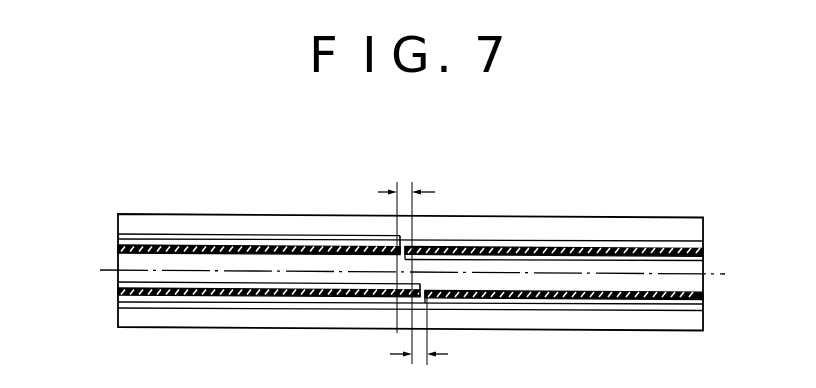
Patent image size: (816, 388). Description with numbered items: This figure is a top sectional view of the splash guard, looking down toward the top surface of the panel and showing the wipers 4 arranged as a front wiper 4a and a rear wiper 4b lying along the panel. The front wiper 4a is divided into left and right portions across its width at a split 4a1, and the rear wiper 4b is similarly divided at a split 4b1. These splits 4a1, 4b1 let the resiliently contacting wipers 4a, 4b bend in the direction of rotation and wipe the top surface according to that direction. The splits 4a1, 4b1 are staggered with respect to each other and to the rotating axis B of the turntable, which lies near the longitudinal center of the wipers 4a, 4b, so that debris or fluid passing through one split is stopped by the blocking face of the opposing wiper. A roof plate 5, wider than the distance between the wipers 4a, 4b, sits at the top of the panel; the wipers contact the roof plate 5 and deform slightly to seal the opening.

The wiper 4 is at (95, 268).
The front wiper 4a is at (293, 249).
The split 4a1 is at (399, 239).
The rear wiper 4b is at (262, 297).
The split 4b1 is at (423, 300).
The roof plate 5 is at (672, 228).
The rotating axis B is at (413, 271).